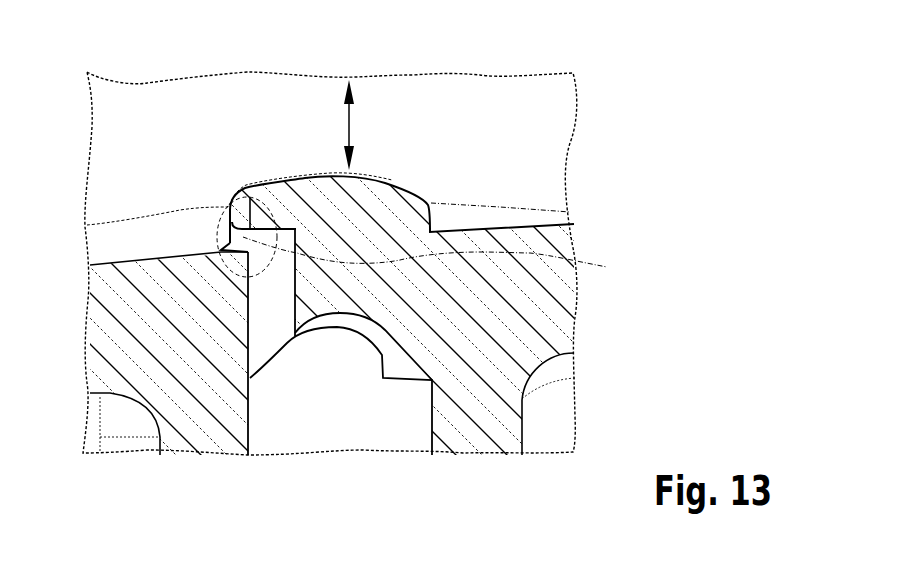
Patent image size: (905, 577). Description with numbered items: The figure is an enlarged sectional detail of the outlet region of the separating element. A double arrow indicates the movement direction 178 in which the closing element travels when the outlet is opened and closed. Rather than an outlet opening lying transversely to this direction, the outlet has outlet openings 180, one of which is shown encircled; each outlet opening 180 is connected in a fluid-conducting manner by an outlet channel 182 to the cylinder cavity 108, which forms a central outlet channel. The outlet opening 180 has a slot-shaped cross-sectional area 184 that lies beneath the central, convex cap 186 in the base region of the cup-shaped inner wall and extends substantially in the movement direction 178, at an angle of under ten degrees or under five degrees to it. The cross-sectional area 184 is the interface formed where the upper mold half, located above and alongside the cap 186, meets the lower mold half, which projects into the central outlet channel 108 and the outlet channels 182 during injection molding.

The cylinder cavity 108 is at (357, 423).
The movement direction 178 is at (350, 128).
The outlet opening 180 is at (217, 198).
The outlet channel 182 is at (273, 333).
The cross-sectional area 184 is at (446, 260).
The cap 186 is at (385, 183).